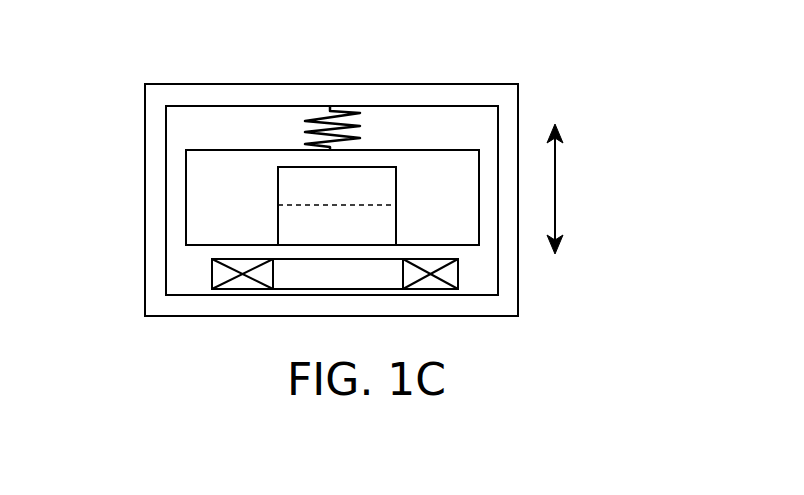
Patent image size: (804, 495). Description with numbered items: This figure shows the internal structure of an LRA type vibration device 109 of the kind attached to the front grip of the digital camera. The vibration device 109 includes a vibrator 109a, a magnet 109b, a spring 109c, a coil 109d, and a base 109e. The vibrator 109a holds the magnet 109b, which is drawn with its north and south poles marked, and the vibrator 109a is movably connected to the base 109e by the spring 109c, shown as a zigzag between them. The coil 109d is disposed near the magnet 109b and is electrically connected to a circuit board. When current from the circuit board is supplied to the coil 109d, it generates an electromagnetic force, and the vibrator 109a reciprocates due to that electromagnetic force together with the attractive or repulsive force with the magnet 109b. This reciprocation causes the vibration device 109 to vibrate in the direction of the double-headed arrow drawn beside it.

The LRA type vibration device 109 is at (558, 102).
The vibrator 109a is at (208, 200).
The magnet 109b is at (397, 178).
The spring 109c is at (323, 115).
The coil 109d is at (431, 277).
The base 109e is at (145, 285).